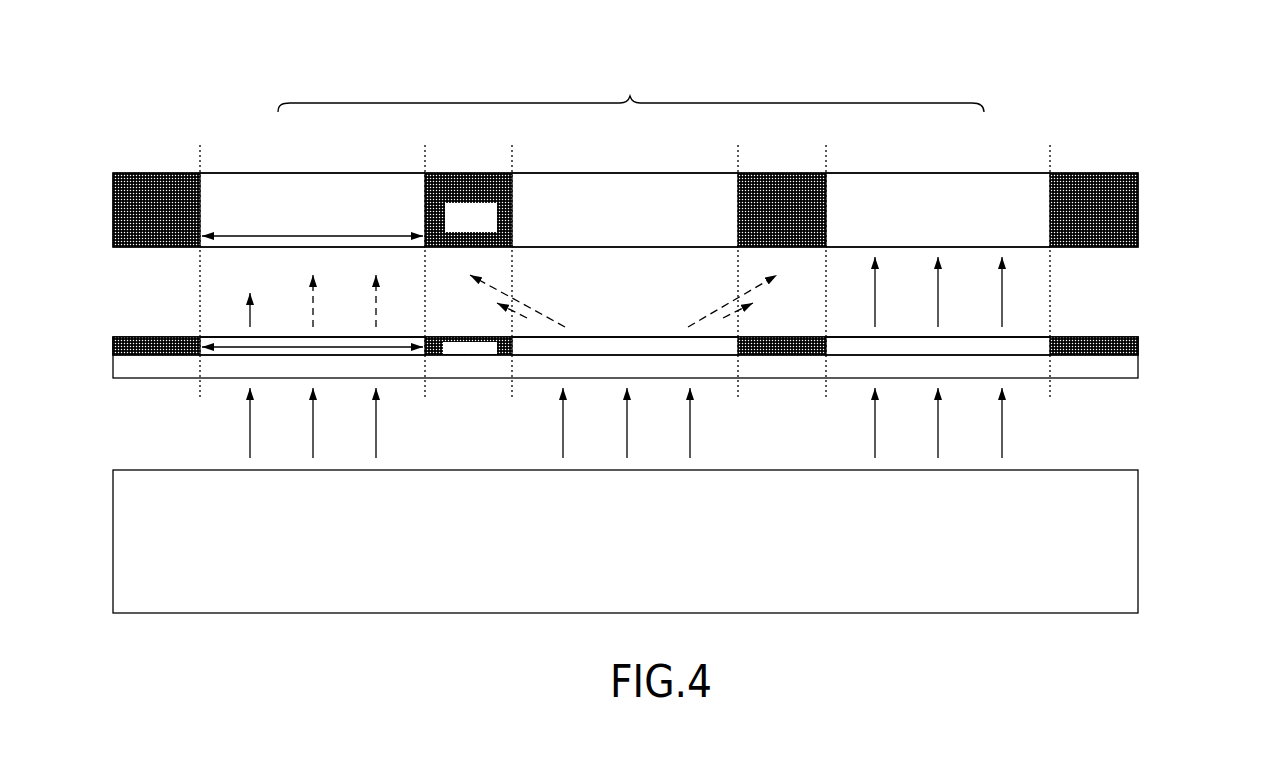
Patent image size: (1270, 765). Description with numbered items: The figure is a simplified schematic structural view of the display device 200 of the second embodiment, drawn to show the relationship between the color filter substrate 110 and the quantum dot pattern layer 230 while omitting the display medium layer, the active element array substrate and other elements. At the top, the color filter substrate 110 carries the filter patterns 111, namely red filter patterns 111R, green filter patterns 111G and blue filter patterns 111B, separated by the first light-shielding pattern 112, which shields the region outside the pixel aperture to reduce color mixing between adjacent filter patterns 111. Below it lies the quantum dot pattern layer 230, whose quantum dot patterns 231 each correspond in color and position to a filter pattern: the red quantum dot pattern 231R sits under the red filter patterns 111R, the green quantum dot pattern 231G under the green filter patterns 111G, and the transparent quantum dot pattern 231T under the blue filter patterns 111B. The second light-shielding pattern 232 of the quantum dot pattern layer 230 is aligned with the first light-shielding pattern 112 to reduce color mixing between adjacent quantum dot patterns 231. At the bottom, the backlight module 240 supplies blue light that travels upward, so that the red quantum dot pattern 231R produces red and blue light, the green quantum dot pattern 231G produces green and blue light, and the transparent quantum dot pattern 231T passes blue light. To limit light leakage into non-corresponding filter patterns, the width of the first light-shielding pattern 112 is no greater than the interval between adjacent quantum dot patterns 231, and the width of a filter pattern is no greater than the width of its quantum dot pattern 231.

The display device 200 is at (157, 59).
The color filter substrate 110 is at (684, 153).
The filter patterns 111 is at (625, 153).
The red filter patterns 111R is at (316, 173).
The green filter patterns 111G is at (627, 173).
The blue filter patterns 111B is at (942, 173).
The first light-shielding pattern 112 is at (472, 173).
The quantum dot pattern layer 230 is at (1162, 355).
The quantum dot pattern 231 is at (629, 311).
The red quantum dot pattern 231R is at (223, 340).
The green quantum dot pattern 231G is at (624, 347).
The transparent quantum dot pattern 231T is at (1020, 347).
The second light-shielding pattern 232 is at (112, 346).
The backlight module 240 is at (1162, 540).